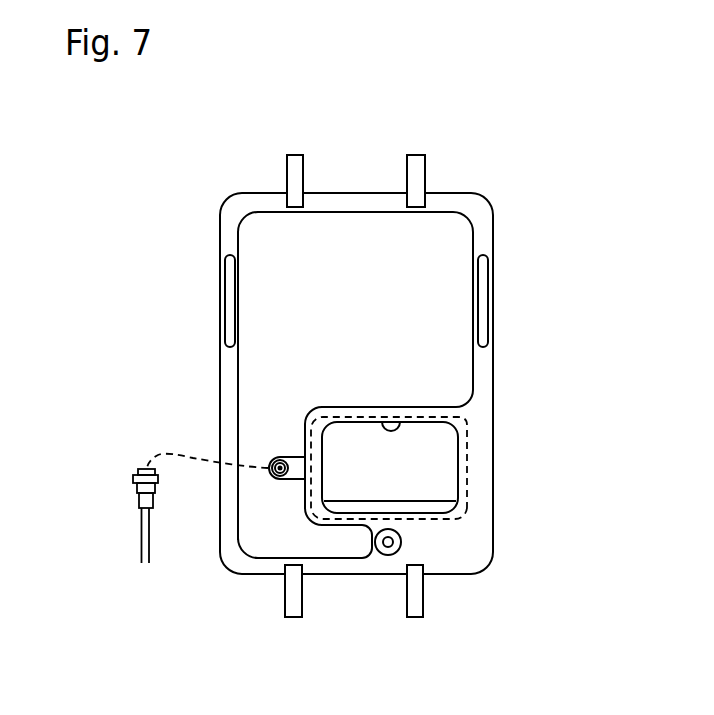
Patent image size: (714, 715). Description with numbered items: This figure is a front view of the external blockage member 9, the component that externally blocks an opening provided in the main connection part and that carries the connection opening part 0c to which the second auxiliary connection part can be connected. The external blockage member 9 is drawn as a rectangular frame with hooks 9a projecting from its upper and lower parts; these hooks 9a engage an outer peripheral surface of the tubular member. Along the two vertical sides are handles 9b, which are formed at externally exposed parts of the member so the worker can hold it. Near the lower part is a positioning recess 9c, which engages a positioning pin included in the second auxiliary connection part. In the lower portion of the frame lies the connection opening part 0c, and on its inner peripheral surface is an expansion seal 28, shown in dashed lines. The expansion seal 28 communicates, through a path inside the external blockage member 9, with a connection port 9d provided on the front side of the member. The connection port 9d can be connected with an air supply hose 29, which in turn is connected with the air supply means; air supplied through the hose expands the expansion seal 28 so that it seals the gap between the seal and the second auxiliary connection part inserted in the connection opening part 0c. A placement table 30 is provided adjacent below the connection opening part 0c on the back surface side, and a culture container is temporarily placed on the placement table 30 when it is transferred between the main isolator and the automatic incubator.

The external blockage member 9 is at (494, 238).
The hooks 9a is at (300, 155).
The handles 9b is at (233, 298).
The positioning recess 9c is at (401, 536).
The connection port 9d is at (280, 457).
The connection opening part 0c is at (402, 423).
The expansion seal 28 is at (467, 421).
The placement table 30 is at (418, 501).
The air supply hose 29 is at (141, 524).